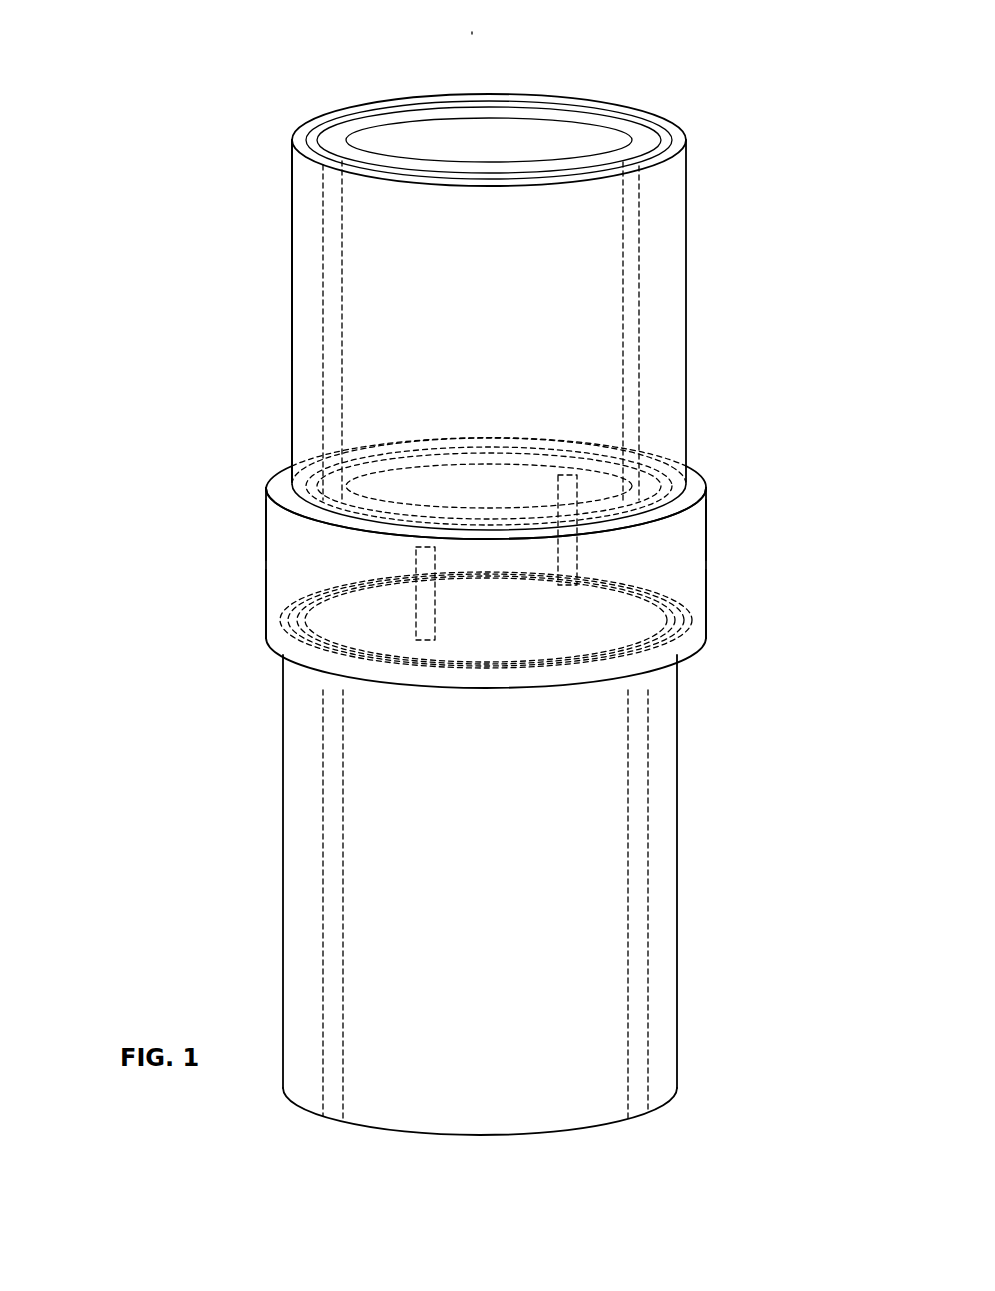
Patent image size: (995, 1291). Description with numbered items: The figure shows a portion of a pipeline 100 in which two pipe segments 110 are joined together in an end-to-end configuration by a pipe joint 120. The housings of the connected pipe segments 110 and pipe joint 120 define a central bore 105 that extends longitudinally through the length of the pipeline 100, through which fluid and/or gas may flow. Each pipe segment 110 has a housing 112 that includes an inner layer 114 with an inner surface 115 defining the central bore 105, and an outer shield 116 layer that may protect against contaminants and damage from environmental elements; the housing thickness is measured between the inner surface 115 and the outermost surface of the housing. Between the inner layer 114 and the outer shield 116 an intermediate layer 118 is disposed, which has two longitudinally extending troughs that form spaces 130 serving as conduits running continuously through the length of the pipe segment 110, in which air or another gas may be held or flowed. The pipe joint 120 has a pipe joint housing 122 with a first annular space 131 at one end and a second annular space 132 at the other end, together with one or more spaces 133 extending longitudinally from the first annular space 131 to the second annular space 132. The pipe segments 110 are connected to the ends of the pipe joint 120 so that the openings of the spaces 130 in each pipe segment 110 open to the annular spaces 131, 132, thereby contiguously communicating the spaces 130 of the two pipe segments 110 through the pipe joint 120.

The pipeline 100 is at (132, 78).
The central bore 105 is at (472, 138).
The pipe segment 110 is at (698, 140).
The housing 112 is at (302, 283).
The inner layer 114 is at (343, 130).
The inner surface 115 is at (563, 130).
The outer shield 116 is at (308, 130).
The intermediate layer 118 is at (323, 127).
The pipe joint 120 is at (718, 482).
The pipe joint housing 122 is at (270, 513).
The space 130 is at (293, 137).
The first annular space 131 is at (297, 522).
The second annular space 132 is at (280, 628).
The space 133 is at (413, 607).